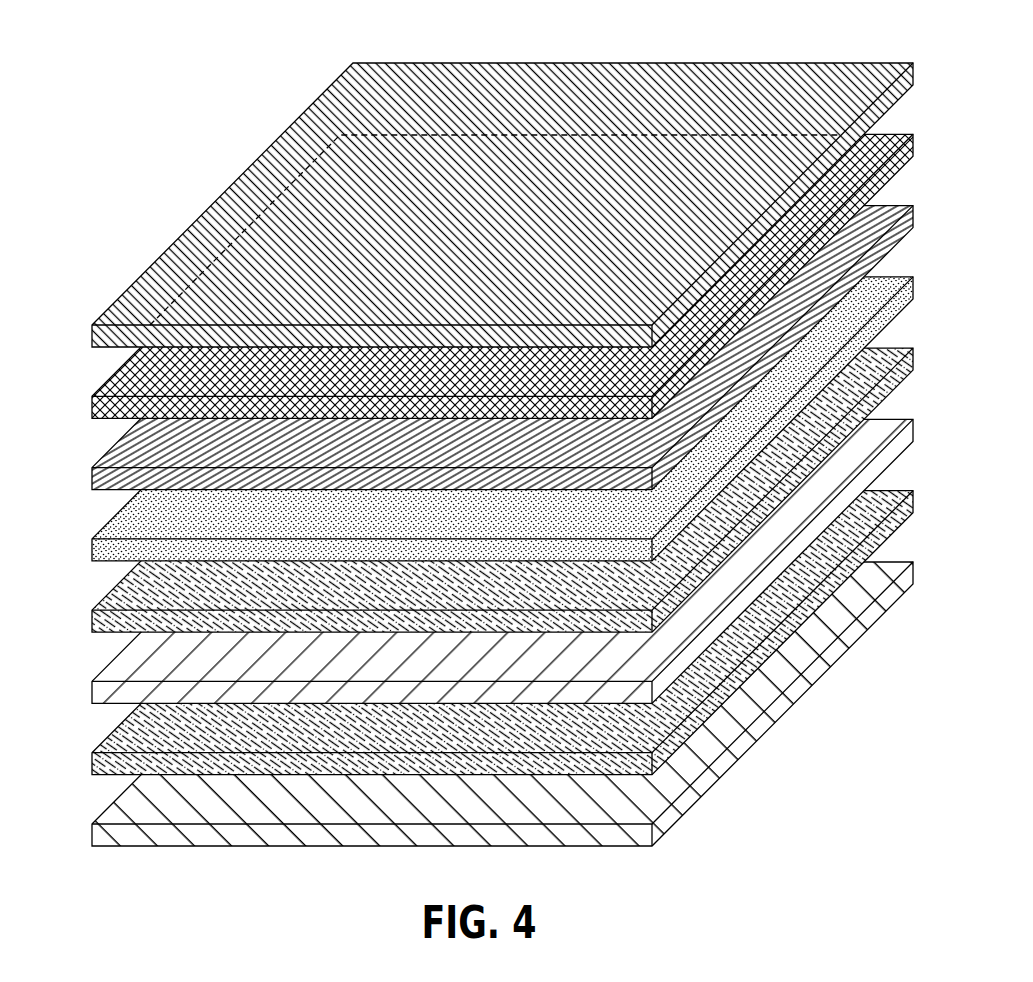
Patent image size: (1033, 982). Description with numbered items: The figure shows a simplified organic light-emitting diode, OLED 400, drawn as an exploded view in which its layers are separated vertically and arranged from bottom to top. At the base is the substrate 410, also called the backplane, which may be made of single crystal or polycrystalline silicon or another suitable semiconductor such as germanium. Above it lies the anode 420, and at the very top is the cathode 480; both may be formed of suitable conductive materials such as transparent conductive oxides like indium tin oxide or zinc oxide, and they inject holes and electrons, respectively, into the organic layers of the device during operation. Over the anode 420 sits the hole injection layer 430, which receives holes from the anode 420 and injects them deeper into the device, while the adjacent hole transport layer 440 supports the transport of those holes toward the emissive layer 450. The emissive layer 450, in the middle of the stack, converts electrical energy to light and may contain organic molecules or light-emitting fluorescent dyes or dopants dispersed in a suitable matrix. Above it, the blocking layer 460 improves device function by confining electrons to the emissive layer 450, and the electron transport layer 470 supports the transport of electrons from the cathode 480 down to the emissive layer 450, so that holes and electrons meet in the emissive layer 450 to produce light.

The OLED 400 is at (461, 431).
The substrate 410 is at (92, 834).
The anode 420 is at (92, 763).
The hole injection layer 430 is at (92, 691).
The hole transport layer 440 is at (92, 620).
The emissive layer 450 is at (92, 549).
The blocking layer 460 is at (92, 478).
The electron transport layer 470 is at (92, 406).
The cathode 480 is at (92, 335).